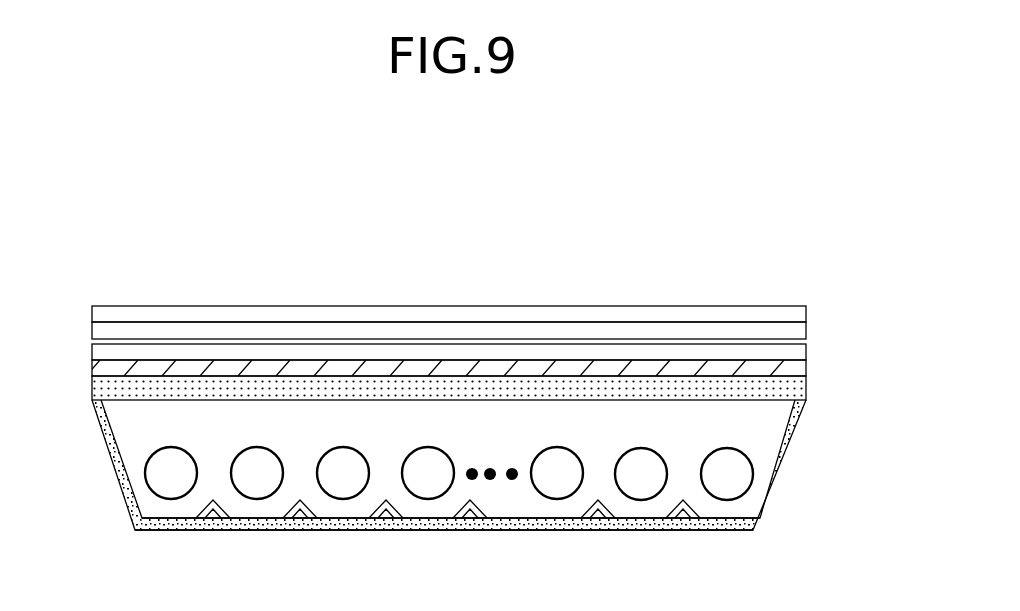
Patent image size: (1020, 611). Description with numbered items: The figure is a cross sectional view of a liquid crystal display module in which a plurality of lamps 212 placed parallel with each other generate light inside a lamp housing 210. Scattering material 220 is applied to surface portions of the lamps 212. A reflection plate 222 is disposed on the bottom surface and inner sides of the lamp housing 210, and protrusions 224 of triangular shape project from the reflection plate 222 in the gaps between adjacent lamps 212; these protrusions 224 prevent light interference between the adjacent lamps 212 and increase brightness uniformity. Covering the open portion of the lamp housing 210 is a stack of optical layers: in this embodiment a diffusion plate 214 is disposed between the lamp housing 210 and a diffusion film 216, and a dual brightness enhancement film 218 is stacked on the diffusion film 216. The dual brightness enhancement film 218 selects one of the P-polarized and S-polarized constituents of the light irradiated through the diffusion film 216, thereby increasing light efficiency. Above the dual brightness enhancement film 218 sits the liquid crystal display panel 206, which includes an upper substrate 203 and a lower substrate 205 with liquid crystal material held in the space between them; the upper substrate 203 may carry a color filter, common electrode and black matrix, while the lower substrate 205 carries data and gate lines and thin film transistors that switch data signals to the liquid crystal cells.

The upper substrate 203 is at (593, 312).
The lower substrate 205 is at (653, 333).
The liquid crystal display panel 206 is at (449, 271).
The lamp housing 210 is at (425, 493).
The lamps 212 is at (506, 462).
The diffusion plate 214 is at (778, 390).
The diffusion film 216 is at (778, 372).
The dual brightness enhancement film 218 is at (776, 357).
The scattering material 220 is at (735, 452).
The reflection plate 222 is at (527, 531).
The protrusions 224 is at (685, 531).